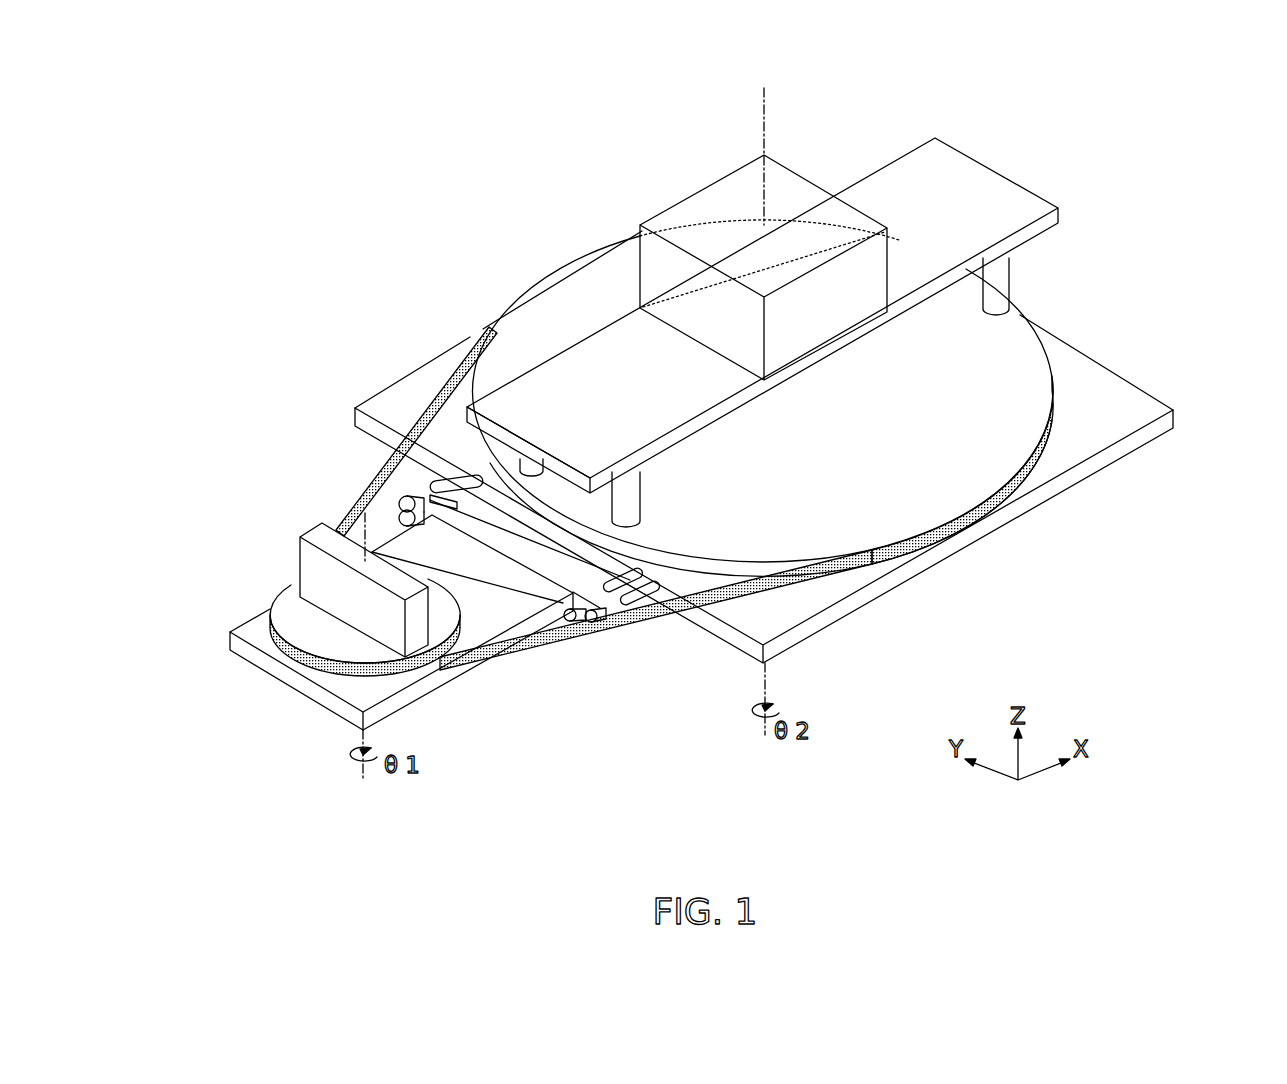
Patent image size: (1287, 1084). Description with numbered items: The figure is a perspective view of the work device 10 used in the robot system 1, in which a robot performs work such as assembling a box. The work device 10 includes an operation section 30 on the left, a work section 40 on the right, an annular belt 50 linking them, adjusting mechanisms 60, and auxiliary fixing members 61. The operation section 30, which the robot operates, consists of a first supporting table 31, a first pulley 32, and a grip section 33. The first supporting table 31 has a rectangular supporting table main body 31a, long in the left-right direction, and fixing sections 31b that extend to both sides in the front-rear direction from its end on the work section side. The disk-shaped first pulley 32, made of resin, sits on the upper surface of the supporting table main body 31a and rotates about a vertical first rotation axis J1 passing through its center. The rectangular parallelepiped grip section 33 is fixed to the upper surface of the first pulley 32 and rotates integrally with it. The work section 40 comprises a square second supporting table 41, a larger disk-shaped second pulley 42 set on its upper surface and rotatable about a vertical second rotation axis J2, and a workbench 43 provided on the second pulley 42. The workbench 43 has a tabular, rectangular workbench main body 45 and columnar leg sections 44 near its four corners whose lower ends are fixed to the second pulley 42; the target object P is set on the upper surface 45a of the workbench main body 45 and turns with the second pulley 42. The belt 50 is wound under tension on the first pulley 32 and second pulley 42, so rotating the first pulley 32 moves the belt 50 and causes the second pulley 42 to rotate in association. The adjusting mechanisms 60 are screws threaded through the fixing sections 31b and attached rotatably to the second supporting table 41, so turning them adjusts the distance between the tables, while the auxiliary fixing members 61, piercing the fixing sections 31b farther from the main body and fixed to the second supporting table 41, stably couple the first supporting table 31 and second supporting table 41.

The robot system 1 is at (700, 444).
The work device 10 is at (699, 444).
The operation section 30 is at (433, 582).
The first supporting table 31 is at (393, 650).
The supporting table main body 31a is at (260, 664).
The fixing sections 31b is at (400, 495).
The first pulley 32 is at (292, 622).
The grip section 33 is at (418, 628).
The work section 40 is at (799, 375).
The second supporting table 41 is at (1152, 432).
The second pulley 42 is at (1013, 377).
The workbench 43 is at (809, 319).
The leg sections 44 is at (1000, 282).
The workbench main body 45 is at (762, 294).
The upper surface 45a is at (522, 395).
The belt 50 is at (452, 380).
The adjusting mechanisms 60 is at (418, 498).
The auxiliary fixing members 61 is at (362, 402).
The target object P is at (697, 215).
The first rotation axis J1 is at (343, 513).
The second rotation axis J2 is at (768, 118).